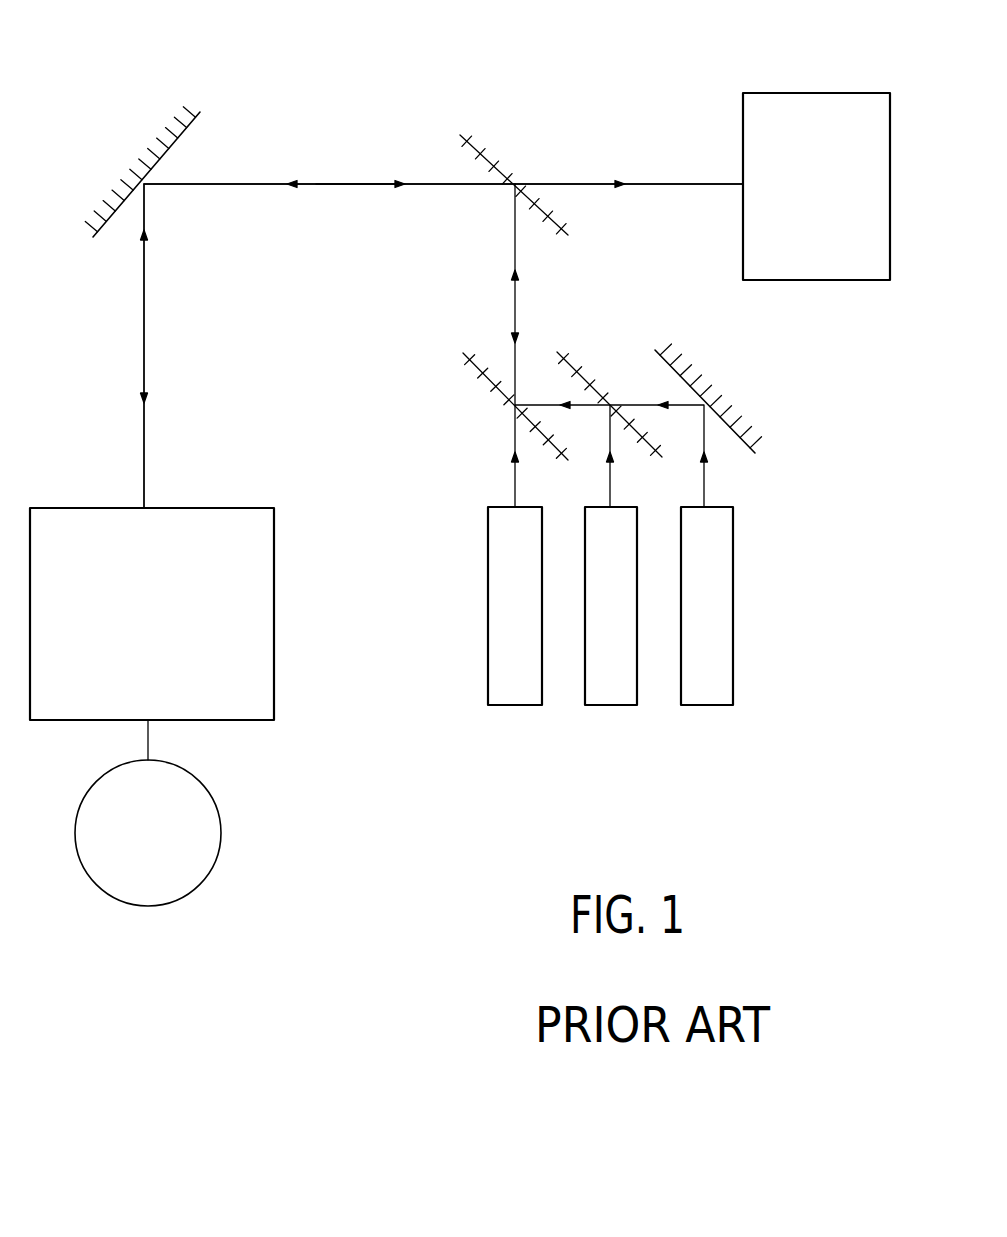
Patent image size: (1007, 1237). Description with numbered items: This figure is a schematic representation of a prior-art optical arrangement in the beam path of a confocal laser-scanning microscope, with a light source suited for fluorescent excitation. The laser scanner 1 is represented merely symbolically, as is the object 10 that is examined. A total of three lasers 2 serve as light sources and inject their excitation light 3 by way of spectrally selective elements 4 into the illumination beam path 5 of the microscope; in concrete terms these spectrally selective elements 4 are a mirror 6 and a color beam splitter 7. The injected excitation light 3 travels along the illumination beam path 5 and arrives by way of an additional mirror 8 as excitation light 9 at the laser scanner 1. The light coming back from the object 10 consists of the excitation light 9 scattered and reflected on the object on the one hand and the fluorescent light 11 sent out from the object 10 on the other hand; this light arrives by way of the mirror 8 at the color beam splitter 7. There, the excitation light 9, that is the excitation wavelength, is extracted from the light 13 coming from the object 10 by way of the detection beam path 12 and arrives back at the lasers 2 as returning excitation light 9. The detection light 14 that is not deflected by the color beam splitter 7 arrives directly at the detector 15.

The laser scanner 1 is at (274, 642).
The lasers 2 is at (692, 705).
The excitation light 3 is at (515, 232).
The spectrally selective elements 4 is at (584, 249).
The illumination beam path 5 is at (140, 340).
The mirror 6 is at (678, 373).
The color beam splitter 7 is at (470, 130).
The additional mirror 8 is at (193, 140).
The excitation light 9 is at (515, 332).
The object 10 is at (148, 813).
The fluorescent light 11 is at (145, 340).
The detection beam path 12 is at (670, 170).
The light coming from object 13 is at (240, 184).
The detection light 14 is at (575, 184).
The detector 15 is at (840, 283).